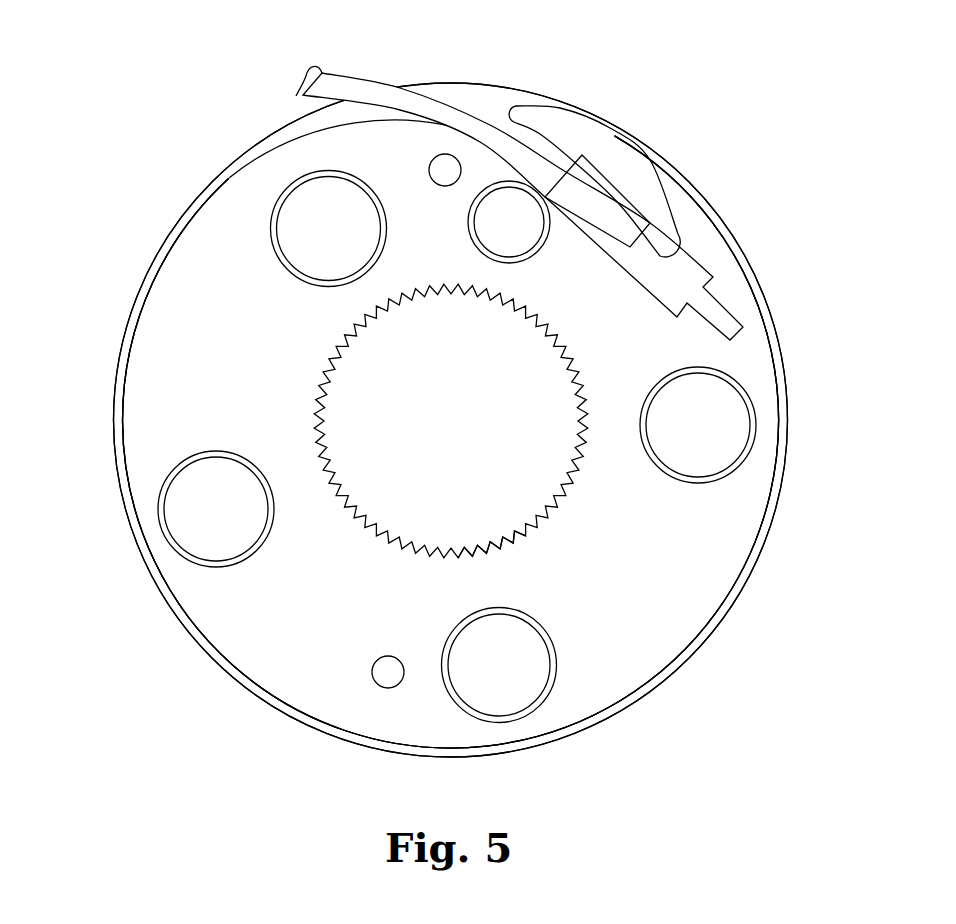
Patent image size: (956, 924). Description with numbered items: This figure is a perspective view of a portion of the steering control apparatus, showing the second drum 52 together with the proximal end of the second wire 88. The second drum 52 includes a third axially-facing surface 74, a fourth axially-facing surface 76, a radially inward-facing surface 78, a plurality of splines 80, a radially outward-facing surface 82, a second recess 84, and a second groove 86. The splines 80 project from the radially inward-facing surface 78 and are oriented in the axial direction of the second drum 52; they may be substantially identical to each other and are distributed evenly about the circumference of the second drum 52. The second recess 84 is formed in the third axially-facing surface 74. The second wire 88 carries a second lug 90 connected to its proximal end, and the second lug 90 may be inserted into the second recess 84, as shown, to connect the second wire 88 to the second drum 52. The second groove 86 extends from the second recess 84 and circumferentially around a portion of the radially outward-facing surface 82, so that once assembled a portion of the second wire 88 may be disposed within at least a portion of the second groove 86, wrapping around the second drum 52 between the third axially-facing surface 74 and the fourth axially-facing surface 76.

The second drum 52 is at (777, 352).
The third axially-facing surface 74 is at (188, 262).
The fourth axially-facing surface 76 is at (116, 362).
The radially inward-facing surface 78 is at (373, 318).
The splines 80 is at (462, 552).
The radially outward-facing surface 82 is at (245, 680).
The second recess 84 is at (663, 242).
The second groove 86 is at (268, 161).
The second wire 88 is at (378, 84).
The second lug 90 is at (600, 195).